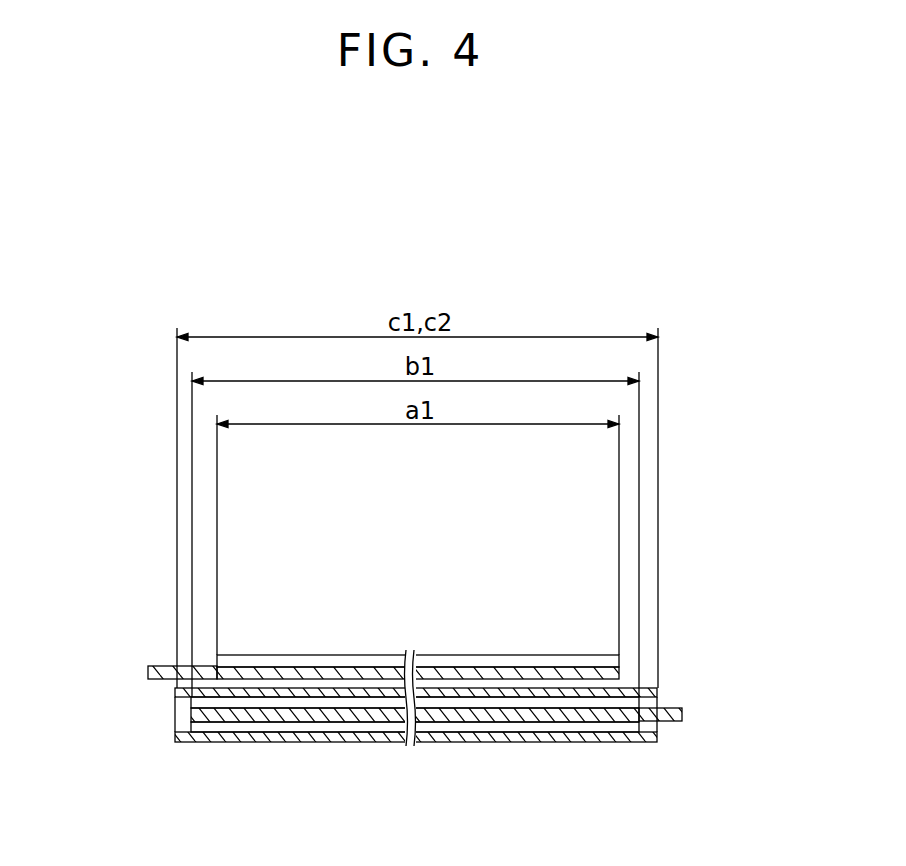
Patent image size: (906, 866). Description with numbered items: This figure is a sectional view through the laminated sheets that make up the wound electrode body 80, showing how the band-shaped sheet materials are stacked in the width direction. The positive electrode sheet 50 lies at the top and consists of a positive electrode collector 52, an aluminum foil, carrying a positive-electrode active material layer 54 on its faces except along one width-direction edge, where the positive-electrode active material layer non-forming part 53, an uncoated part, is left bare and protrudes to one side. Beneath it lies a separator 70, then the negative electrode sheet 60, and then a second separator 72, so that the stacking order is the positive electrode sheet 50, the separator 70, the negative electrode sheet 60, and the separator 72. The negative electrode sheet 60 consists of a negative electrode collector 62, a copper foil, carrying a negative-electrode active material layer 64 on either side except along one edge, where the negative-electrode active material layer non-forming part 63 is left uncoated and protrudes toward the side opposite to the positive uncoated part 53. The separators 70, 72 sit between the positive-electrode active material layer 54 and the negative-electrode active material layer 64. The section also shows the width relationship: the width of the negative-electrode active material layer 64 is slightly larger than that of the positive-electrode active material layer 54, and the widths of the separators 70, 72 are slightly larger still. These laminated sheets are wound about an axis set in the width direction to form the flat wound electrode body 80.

The positive electrode sheet 50 is at (333, 633).
The positive electrode collector 52 is at (497, 666).
The positive-electrode active material layer non-forming part 53 is at (168, 666).
The positive-electrode active material layer 54 is at (259, 674).
The negative electrode sheet 60 is at (481, 752).
The negative electrode collector 62 is at (340, 718).
The negative-electrode active material layer non-forming part 63 is at (677, 708).
The negative-electrode active material layer 64 is at (469, 733).
The separator 70 is at (191, 700).
The separator 72 is at (183, 742).
The wound electrode body 80 is at (297, 744).